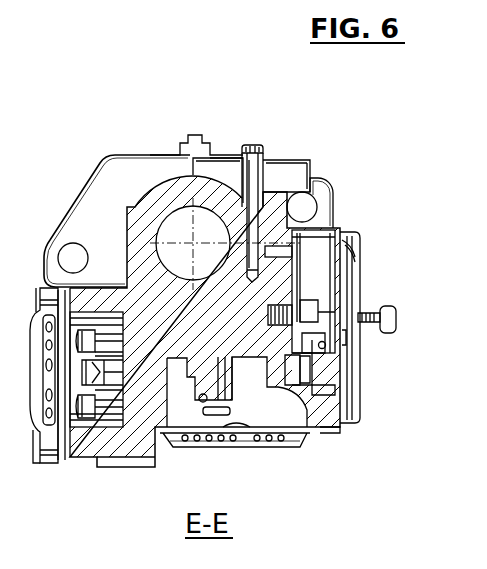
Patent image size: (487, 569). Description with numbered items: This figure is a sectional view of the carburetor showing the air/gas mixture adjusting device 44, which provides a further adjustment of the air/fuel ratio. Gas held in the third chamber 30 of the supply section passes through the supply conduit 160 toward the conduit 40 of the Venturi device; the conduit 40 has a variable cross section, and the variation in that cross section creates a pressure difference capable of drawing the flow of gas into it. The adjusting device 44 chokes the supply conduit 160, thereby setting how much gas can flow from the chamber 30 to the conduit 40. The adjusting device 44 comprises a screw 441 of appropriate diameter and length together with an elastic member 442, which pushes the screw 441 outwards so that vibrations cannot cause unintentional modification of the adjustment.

The third chamber 30 is at (317, 275).
The conduit 40 is at (177, 228).
The air/gas mixture adjusting device 44 is at (247, 147).
The elastic member 442 is at (263, 165).
The screw 441 is at (310, 163).
The supply conduit 160 is at (292, 244).